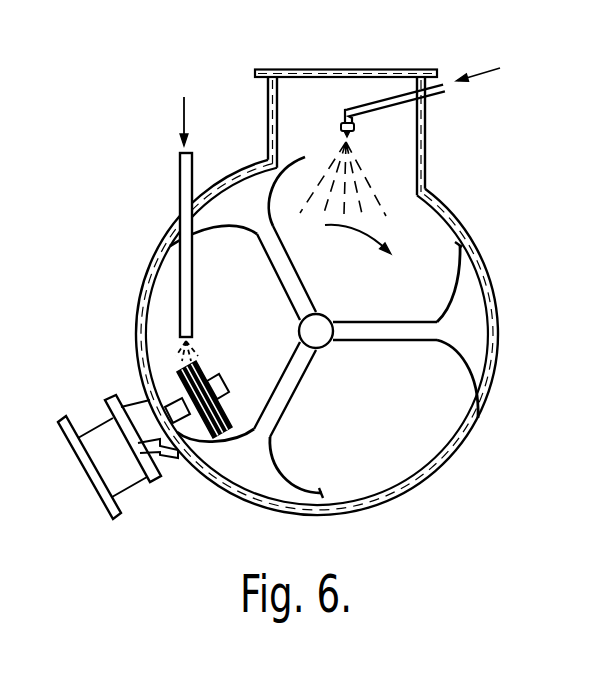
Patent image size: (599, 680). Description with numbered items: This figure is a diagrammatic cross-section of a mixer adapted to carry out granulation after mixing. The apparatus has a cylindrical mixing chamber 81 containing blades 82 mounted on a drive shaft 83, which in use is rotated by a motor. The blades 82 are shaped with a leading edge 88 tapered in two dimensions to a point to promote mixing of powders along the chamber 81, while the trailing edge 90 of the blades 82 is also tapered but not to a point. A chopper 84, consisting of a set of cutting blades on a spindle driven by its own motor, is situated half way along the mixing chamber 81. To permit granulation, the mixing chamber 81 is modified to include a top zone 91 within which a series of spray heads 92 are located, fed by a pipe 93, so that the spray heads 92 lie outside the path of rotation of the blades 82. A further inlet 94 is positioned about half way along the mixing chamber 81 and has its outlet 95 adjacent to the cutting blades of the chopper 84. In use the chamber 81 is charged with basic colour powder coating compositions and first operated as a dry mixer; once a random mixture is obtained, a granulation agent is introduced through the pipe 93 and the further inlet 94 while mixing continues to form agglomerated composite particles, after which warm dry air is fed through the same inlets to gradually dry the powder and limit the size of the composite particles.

The mixing chamber 81 is at (468, 231).
The blades 82 is at (233, 187).
The drive shaft 83 is at (318, 323).
The chopper 84 is at (163, 378).
The leading edge 88 is at (478, 372).
The trailing edge 90 is at (257, 470).
The top zone 91 is at (351, 82).
The spray heads 92 is at (352, 131).
The pipe 93 is at (440, 94).
The further inlet 94 is at (180, 279).
The outlet 95 is at (180, 339).